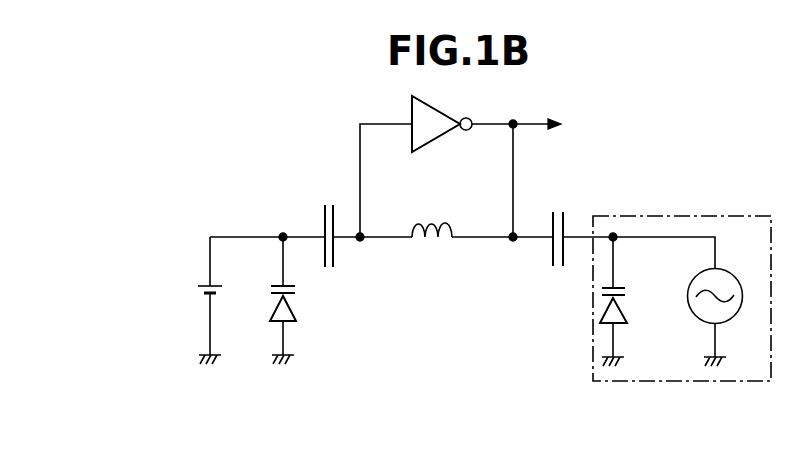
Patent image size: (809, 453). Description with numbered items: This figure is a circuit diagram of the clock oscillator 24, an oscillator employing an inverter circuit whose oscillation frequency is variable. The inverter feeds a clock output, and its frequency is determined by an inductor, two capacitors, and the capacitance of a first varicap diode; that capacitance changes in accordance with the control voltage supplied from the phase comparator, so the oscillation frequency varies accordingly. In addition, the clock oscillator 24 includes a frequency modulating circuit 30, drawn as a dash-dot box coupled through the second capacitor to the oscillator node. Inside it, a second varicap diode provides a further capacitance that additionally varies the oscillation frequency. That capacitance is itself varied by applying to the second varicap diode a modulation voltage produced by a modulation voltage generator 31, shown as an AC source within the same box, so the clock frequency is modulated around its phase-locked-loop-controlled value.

The clock oscillator 24 is at (258, 163).
The frequency modulating circuit 30 is at (739, 212).
The modulation voltage generator 31 is at (737, 311).